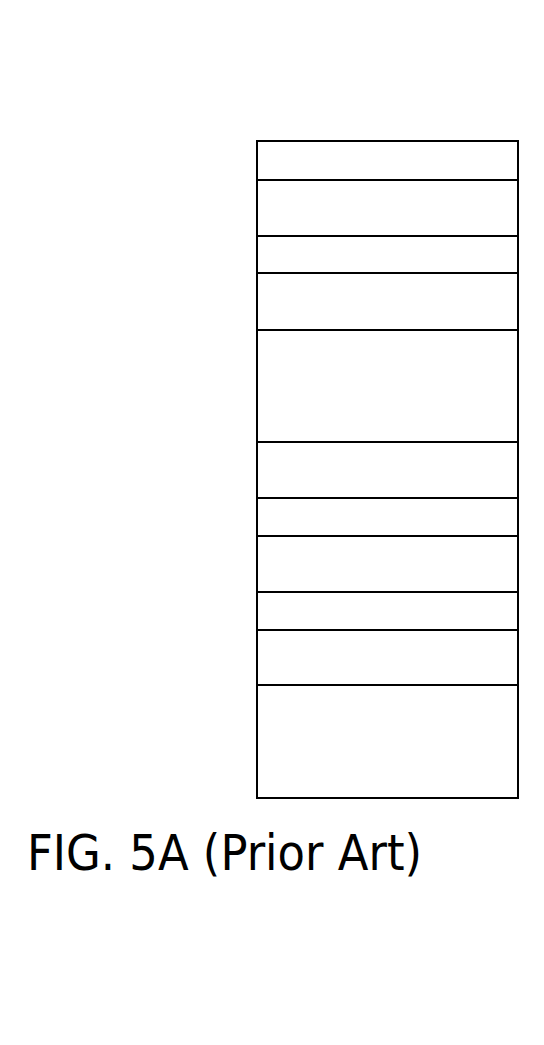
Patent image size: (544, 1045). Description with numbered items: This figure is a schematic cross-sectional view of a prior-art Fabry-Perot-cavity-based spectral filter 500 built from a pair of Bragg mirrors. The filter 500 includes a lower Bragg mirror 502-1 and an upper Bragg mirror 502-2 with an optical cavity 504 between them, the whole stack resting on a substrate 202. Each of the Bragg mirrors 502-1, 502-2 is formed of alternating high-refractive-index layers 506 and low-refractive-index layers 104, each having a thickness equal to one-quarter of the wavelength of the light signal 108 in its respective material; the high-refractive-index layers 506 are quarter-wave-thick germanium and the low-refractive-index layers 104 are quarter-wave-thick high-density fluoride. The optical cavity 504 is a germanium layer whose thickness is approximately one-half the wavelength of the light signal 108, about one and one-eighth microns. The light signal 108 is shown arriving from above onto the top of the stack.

The filter 500 is at (116, 72).
The light signal 108 is at (392, 86).
The Bragg mirror 502-2 is at (248, 143).
The Bragg mirror 502-1 is at (248, 443).
The optical cavity 504 is at (257, 385).
The high-refractive-index layer 506 is at (412, 174).
The low-refractive-index layer 104 is at (412, 221).
The substrate 202 is at (502, 783).